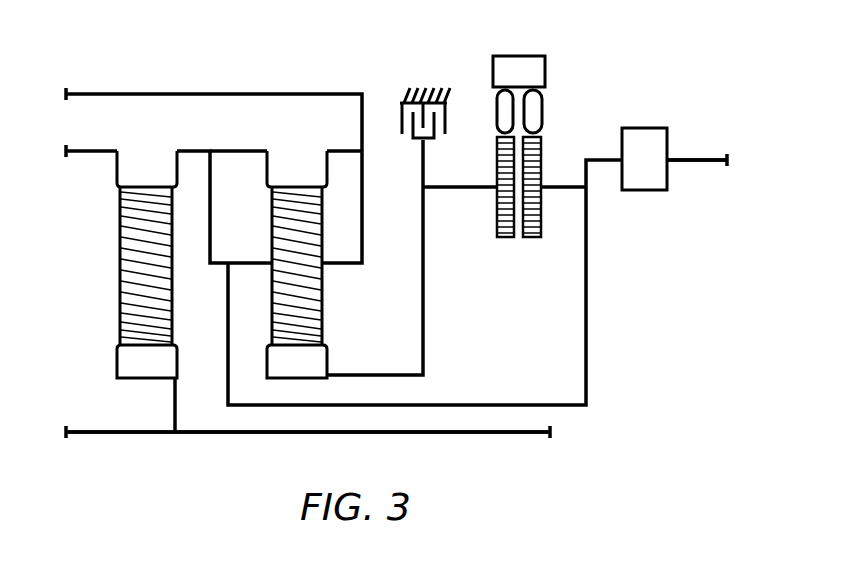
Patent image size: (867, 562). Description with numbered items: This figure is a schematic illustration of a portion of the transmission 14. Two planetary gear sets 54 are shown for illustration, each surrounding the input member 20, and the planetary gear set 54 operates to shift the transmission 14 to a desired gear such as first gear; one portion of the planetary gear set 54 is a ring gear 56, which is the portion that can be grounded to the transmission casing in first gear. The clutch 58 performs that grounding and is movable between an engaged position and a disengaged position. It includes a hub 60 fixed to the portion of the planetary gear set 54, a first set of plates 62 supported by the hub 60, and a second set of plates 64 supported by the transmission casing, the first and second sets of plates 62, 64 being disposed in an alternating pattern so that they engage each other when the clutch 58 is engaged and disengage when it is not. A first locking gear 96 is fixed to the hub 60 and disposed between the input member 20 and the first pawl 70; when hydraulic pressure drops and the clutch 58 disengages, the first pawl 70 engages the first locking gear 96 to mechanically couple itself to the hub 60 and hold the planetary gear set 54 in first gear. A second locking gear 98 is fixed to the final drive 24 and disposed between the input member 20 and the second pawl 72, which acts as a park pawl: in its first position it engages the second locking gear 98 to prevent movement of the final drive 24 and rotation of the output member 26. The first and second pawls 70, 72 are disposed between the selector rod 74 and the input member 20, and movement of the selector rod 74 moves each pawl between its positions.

The transmission 14 is at (684, 84).
The input member 20 is at (498, 435).
The final drive 24 is at (645, 128).
The output member 26 is at (690, 162).
The planetary gear set 54 is at (334, 280).
The ring gear 56 is at (330, 363).
The clutch 58 is at (412, 146).
The hub 60 is at (423, 178).
The first set of plates 62 is at (398, 108).
The second set of plates 64 is at (402, 136).
The first pawl 70 is at (496, 115).
The second pawl 72 is at (544, 110).
The selector rod 74 is at (493, 72).
The first locking gear 96 is at (497, 208).
The second locking gear 98 is at (543, 170).